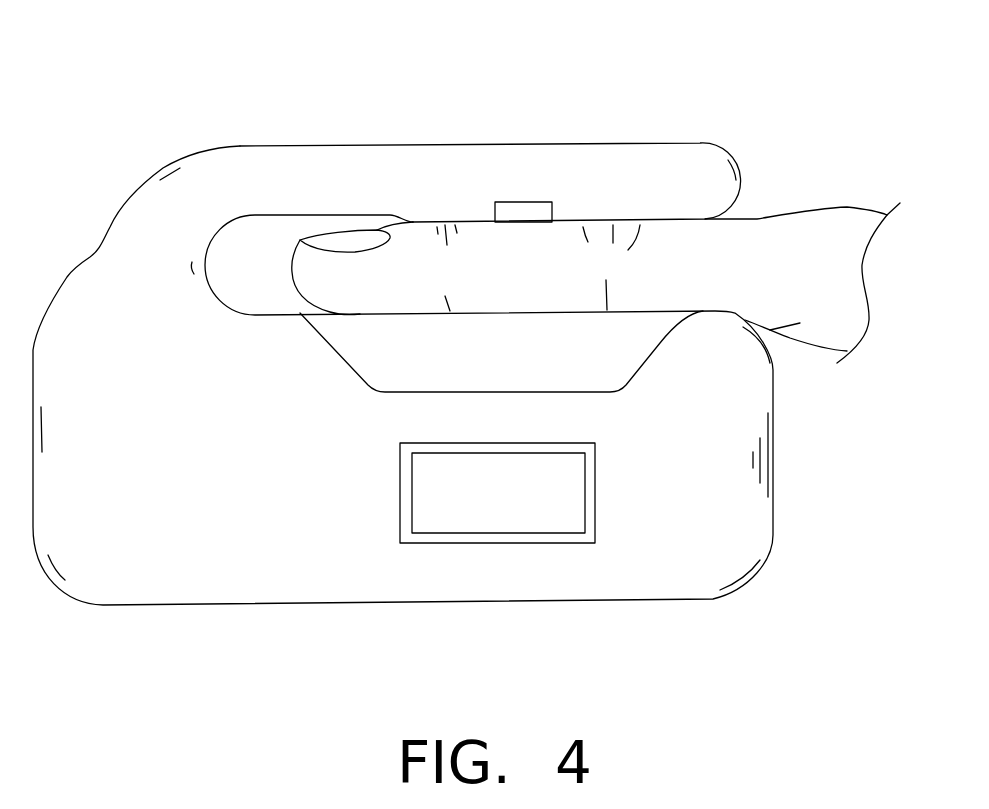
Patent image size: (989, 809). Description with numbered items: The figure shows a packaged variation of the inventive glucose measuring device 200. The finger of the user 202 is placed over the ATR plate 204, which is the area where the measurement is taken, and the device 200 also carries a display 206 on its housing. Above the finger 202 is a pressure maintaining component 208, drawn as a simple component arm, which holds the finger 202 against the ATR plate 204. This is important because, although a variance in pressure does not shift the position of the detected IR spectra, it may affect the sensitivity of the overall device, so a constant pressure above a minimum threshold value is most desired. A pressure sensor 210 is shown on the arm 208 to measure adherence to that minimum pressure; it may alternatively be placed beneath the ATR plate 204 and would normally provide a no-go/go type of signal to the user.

The glucose measuring device 200 is at (138, 78).
The finger of the user 202 is at (773, 233).
The ATR plate 204 is at (525, 365).
The display 206 is at (435, 523).
The pressure maintaining component 208 is at (455, 147).
The pressure sensor 210 is at (522, 202).